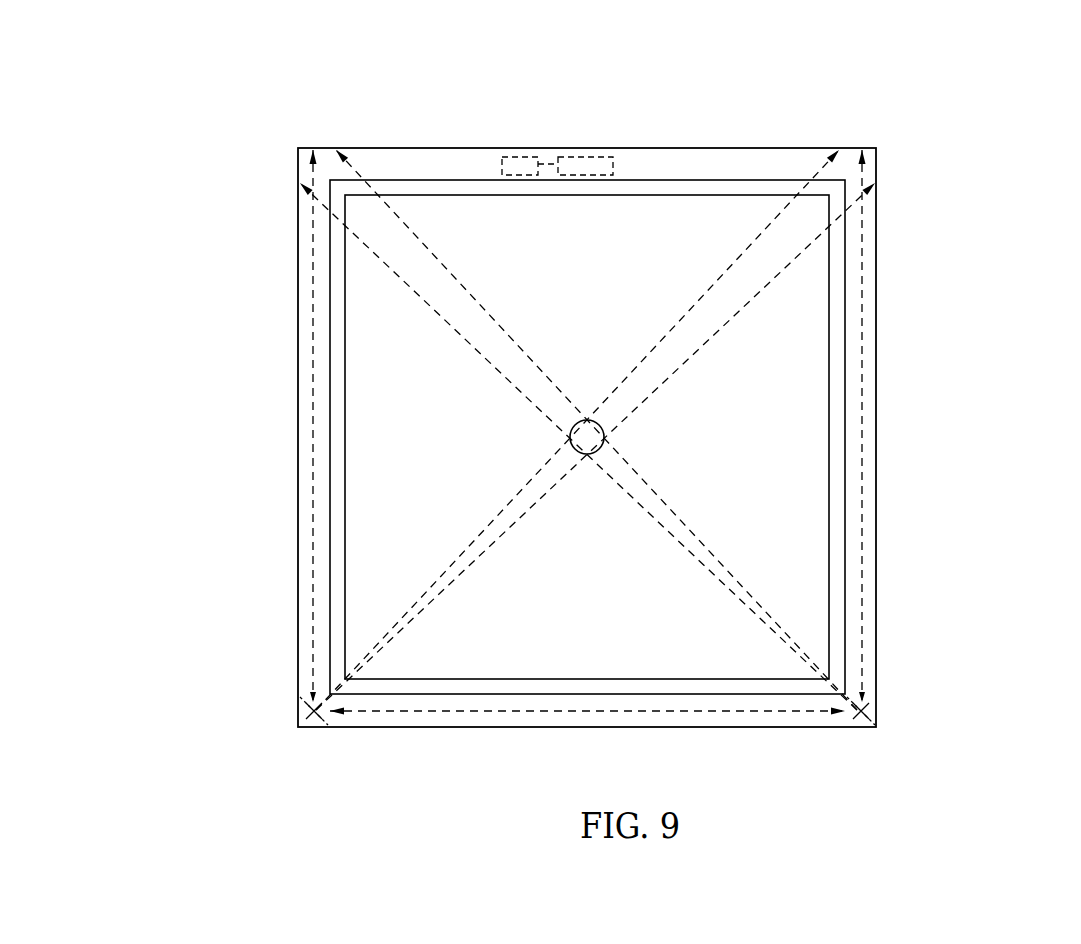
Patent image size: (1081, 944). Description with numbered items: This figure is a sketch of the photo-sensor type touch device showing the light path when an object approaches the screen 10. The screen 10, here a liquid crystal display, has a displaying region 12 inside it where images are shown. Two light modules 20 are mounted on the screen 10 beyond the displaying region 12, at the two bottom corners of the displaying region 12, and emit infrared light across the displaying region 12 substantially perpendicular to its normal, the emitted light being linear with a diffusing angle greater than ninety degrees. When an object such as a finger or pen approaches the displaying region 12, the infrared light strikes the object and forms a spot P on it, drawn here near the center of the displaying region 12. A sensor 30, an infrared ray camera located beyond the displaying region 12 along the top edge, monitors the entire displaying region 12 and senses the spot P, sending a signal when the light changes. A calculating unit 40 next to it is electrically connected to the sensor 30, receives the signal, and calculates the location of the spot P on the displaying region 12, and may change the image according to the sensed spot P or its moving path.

The screen 10 is at (877, 470).
The displaying region 12 is at (383, 403).
The light modules 20 is at (314, 712).
The sensor 30 is at (592, 162).
The calculating unit 40 is at (518, 162).
The spot P is at (590, 441).